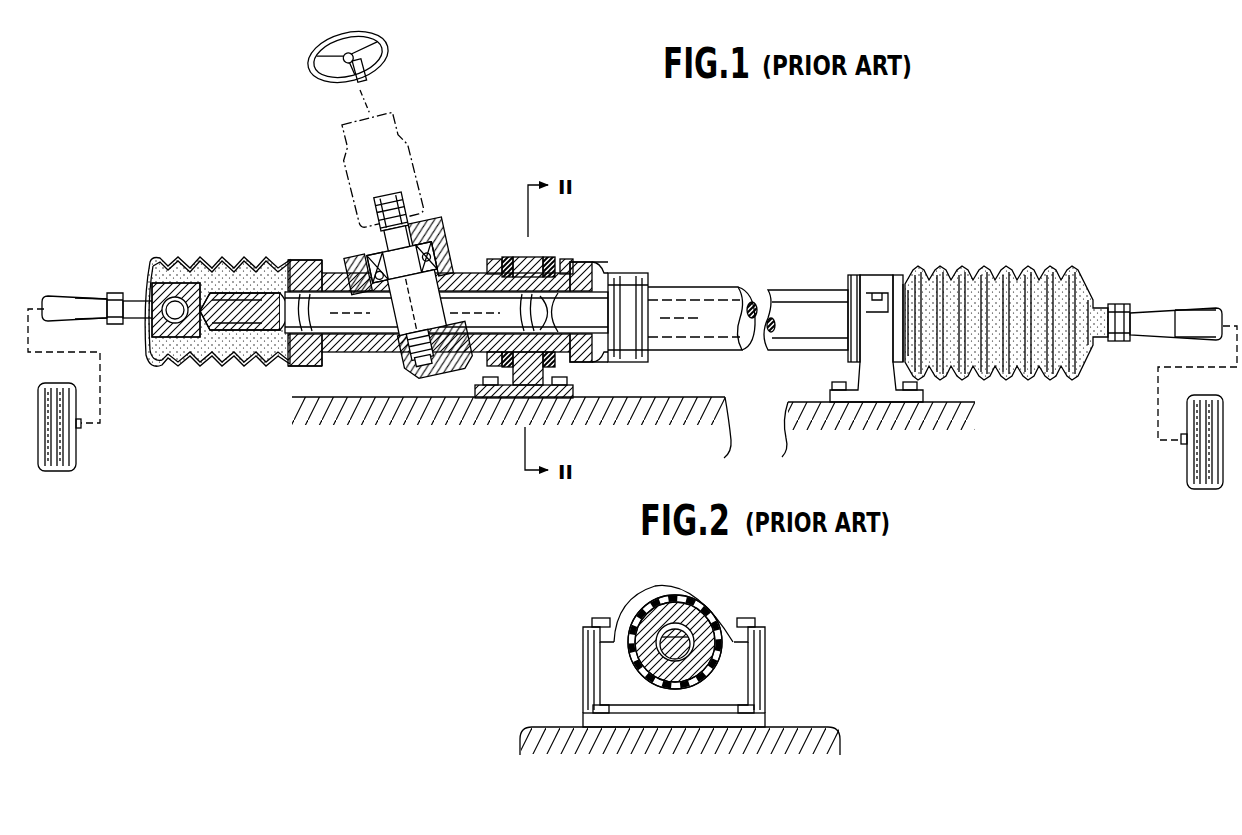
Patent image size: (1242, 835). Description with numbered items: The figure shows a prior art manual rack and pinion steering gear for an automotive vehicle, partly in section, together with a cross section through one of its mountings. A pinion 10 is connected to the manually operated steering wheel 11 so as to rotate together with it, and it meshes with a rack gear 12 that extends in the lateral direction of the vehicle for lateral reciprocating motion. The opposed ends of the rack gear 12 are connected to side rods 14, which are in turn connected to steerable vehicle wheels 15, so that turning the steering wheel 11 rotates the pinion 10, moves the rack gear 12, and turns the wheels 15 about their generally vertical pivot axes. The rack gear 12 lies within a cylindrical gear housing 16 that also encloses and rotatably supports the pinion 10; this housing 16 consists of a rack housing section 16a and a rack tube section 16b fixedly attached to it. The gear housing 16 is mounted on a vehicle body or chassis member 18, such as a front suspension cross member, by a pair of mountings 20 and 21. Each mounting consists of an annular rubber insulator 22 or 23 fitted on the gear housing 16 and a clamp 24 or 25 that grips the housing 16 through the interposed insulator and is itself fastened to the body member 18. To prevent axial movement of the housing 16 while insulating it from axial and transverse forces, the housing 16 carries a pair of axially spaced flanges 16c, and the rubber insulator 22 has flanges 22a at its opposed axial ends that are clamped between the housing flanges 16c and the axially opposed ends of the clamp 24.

In FIG. 1, the pinion 10 is at (417, 323).
In FIG. 1, the steering wheel 11 is at (392, 51).
In FIG. 1, the rack gear 12 is at (582, 327).
In FIG. 2, the rack gear 12 is at (654, 606).
In FIG. 1, the side rods 14 is at (66, 303).
In FIG. 1, the steerable vehicle wheels 15 is at (62, 472).
In FIG. 1, the gear housing 16 is at (638, 266).
In FIG. 1, the rack housing section 16a is at (602, 283).
In FIG. 1, the rack tube section 16b is at (710, 290).
In FIG. 1, the flanges 16c is at (482, 266).
In FIG. 1, the vehicle body or chassis member 18 is at (708, 408).
In FIG. 2, the vehicle body or chassis member 18 is at (810, 737).
In FIG. 1, the mounting 20 is at (505, 248).
In FIG. 1, the mounting 21 is at (888, 270).
In FIG. 1, the annular rubber insulator 22 is at (503, 262).
In FIG. 2, the annular rubber insulator 22 is at (626, 614).
In FIG. 1, the flanges 22a is at (550, 257).
In FIG. 1, the annular rubber insulator 23 is at (853, 270).
In FIG. 1, the clamp 24 is at (522, 257).
In FIG. 2, the clamp 24 is at (720, 610).
In FIG. 1, the clamp 25 is at (882, 400).